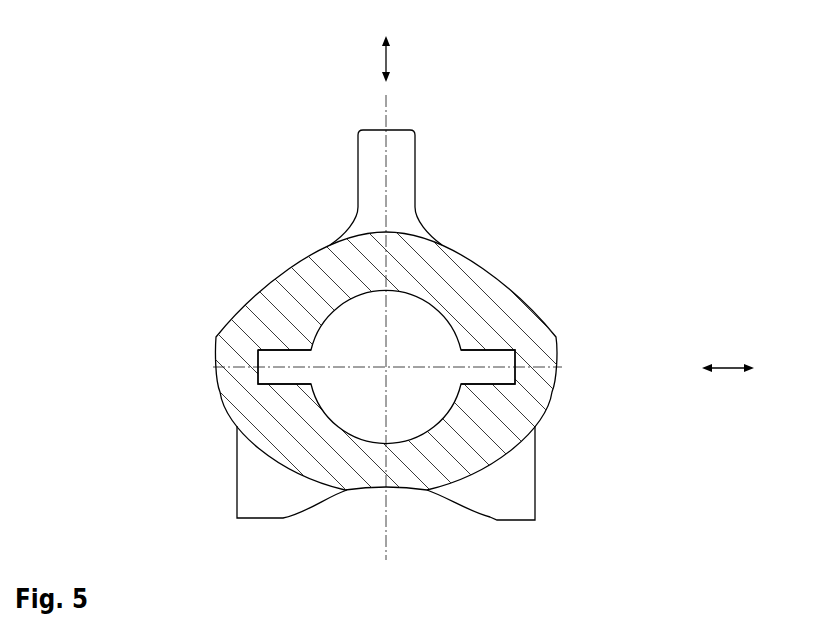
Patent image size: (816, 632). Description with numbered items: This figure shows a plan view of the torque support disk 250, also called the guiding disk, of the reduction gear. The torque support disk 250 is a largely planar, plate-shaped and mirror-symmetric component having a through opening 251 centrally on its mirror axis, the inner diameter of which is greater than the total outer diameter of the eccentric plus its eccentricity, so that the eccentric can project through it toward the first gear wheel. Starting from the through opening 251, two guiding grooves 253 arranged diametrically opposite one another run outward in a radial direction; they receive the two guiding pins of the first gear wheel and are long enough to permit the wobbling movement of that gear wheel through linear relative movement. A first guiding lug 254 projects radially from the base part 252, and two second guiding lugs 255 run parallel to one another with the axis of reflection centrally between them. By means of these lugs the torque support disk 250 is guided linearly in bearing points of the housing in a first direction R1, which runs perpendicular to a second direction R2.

The torque support disk 250 is at (240, 276).
The through opening 251 is at (348, 330).
The base part 252 is at (308, 275).
The guiding grooves 253 is at (272, 373).
The first guiding lug 254 is at (407, 163).
The second guiding lugs 255 is at (259, 498).
The first direction R1 is at (387, 58).
The second direction R2 is at (725, 368).